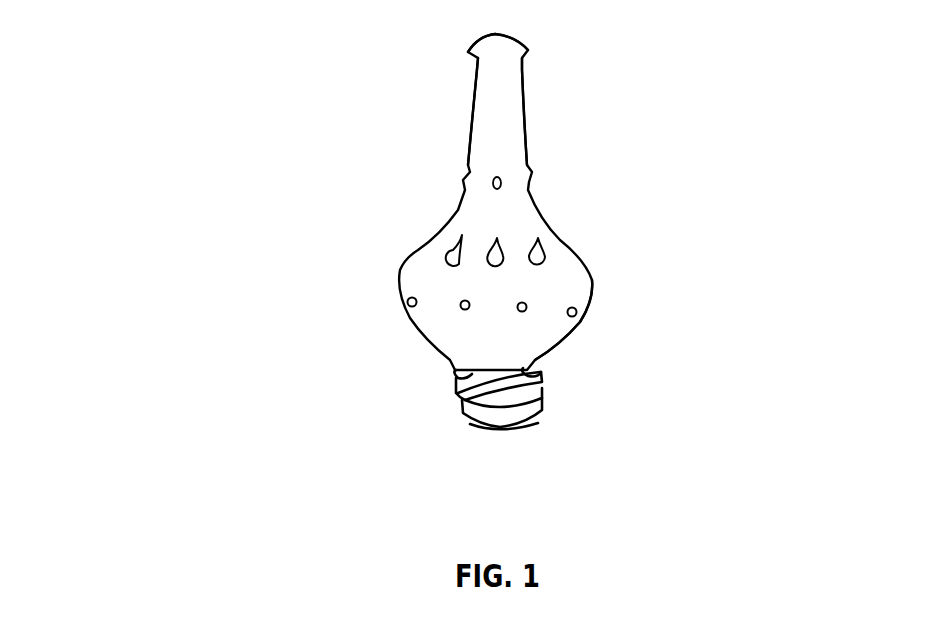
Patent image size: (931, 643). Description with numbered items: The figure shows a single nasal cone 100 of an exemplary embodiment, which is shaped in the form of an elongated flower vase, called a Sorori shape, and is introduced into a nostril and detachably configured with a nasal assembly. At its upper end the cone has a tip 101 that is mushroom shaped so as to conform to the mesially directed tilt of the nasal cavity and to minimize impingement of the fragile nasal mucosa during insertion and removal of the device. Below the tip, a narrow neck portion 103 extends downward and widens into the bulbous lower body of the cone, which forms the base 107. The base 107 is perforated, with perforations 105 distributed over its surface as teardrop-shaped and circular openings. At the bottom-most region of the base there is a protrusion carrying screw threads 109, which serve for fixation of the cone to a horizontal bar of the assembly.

The nasal cone 100 is at (345, 365).
The tip 101 is at (515, 40).
The neck portion 103 is at (525, 127).
The perforations 105 is at (547, 250).
The base 107 is at (587, 315).
The screw threads 109 is at (535, 400).